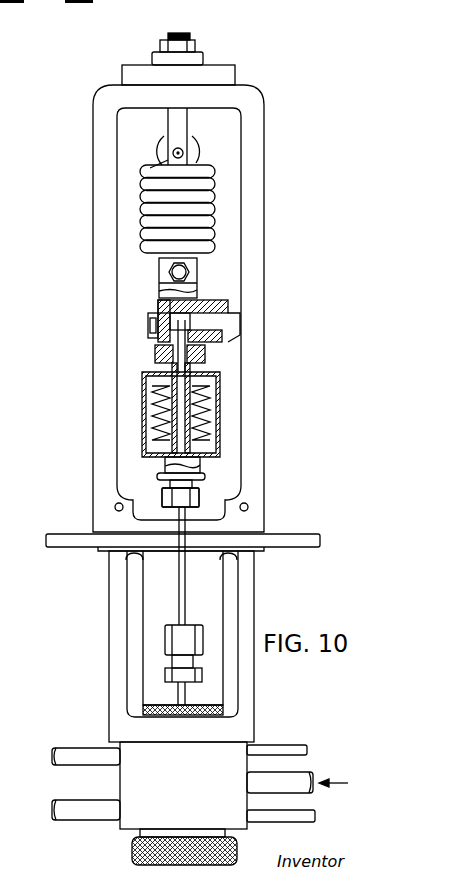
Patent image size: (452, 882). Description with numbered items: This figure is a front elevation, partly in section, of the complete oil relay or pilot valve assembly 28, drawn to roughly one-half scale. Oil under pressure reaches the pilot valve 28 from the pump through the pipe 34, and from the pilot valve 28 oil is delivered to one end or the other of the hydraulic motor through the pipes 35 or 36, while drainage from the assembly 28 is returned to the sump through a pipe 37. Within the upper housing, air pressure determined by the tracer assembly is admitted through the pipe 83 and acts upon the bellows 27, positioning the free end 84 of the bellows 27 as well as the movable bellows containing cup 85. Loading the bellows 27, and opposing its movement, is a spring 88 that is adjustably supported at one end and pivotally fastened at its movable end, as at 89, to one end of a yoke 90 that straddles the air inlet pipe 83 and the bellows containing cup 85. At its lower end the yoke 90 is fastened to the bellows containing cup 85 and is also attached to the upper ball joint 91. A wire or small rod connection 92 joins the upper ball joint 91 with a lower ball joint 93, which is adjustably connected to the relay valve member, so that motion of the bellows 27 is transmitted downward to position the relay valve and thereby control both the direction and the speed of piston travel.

The pilot valve 28 is at (300, 408).
The spring 88 is at (200, 168).
The pivotal fastening 89 is at (190, 272).
The yoke 90 is at (159, 291).
The pipe 83 is at (228, 317).
The free end 84 is at (206, 372).
The bellows 27 is at (146, 441).
The bellows containing cup 85 is at (212, 446).
The upper ball joint 91 is at (162, 497).
The rod connection 92 is at (186, 602).
The lower ball joint 93 is at (170, 625).
The pipe 36 is at (82, 747).
The pipe 37 is at (290, 747).
The pipe 35 is at (68, 800).
The pipe 34 is at (306, 772).